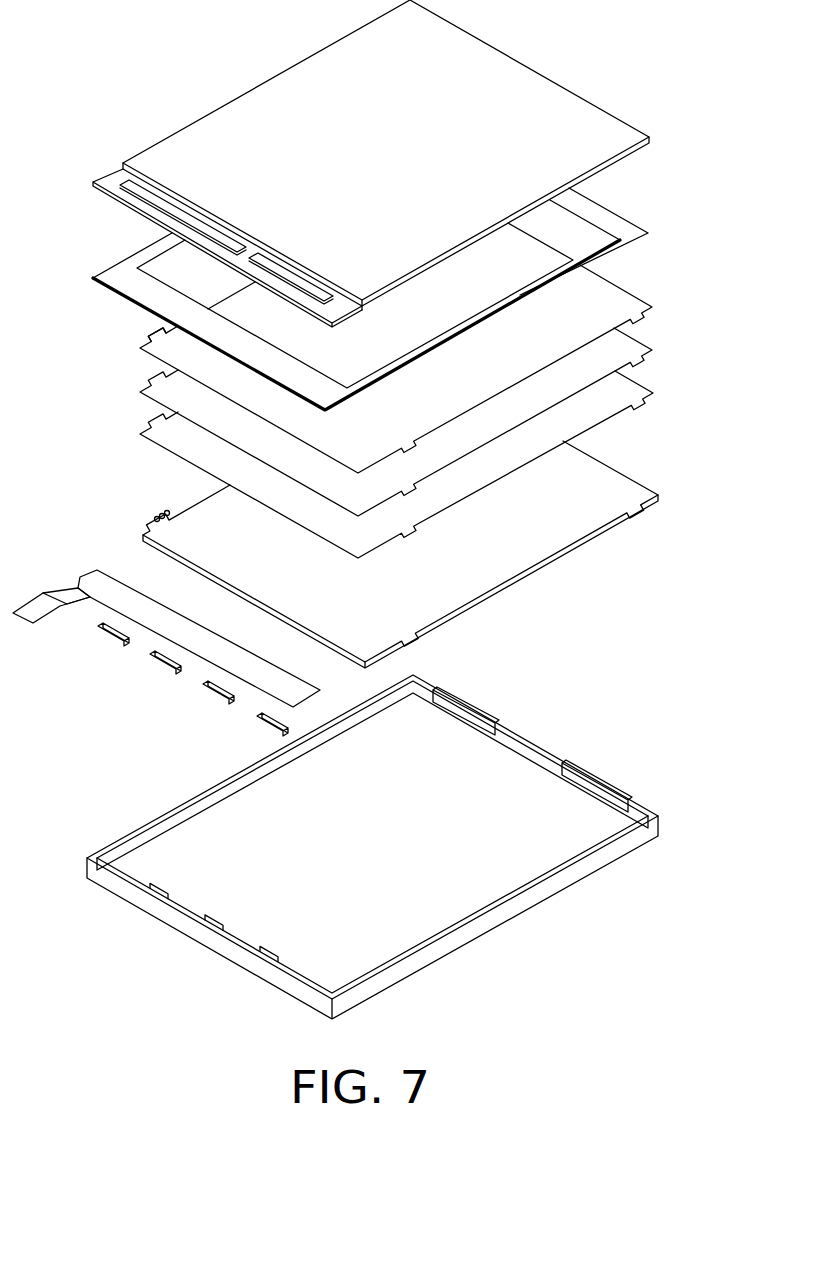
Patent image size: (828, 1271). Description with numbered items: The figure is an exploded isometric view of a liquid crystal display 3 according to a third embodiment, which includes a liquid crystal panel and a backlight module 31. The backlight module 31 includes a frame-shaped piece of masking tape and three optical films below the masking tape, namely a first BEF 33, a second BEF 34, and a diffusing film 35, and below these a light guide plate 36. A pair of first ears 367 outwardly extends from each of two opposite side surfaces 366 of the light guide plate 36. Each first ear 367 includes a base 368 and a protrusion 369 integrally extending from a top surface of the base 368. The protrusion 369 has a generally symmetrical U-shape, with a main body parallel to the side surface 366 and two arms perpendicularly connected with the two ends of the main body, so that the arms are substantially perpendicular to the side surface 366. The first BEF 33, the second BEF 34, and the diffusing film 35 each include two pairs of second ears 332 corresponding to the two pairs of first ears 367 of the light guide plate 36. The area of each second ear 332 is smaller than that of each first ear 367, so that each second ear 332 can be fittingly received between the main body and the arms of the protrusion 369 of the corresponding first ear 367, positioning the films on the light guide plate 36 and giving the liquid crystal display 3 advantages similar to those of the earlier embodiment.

The liquid crystal display 3 is at (182, 51).
The backlight module 31 is at (675, 220).
The first BEF 33 is at (595, 291).
The second ear 332 is at (147, 347).
The second BEF 34 is at (627, 343).
The diffusing film 35 is at (627, 392).
The light guide plate 36 is at (605, 444).
The side surface 366 is at (200, 491).
The first ear 367 is at (72, 483).
The base 368 is at (160, 514).
The protrusion 369 is at (152, 519).